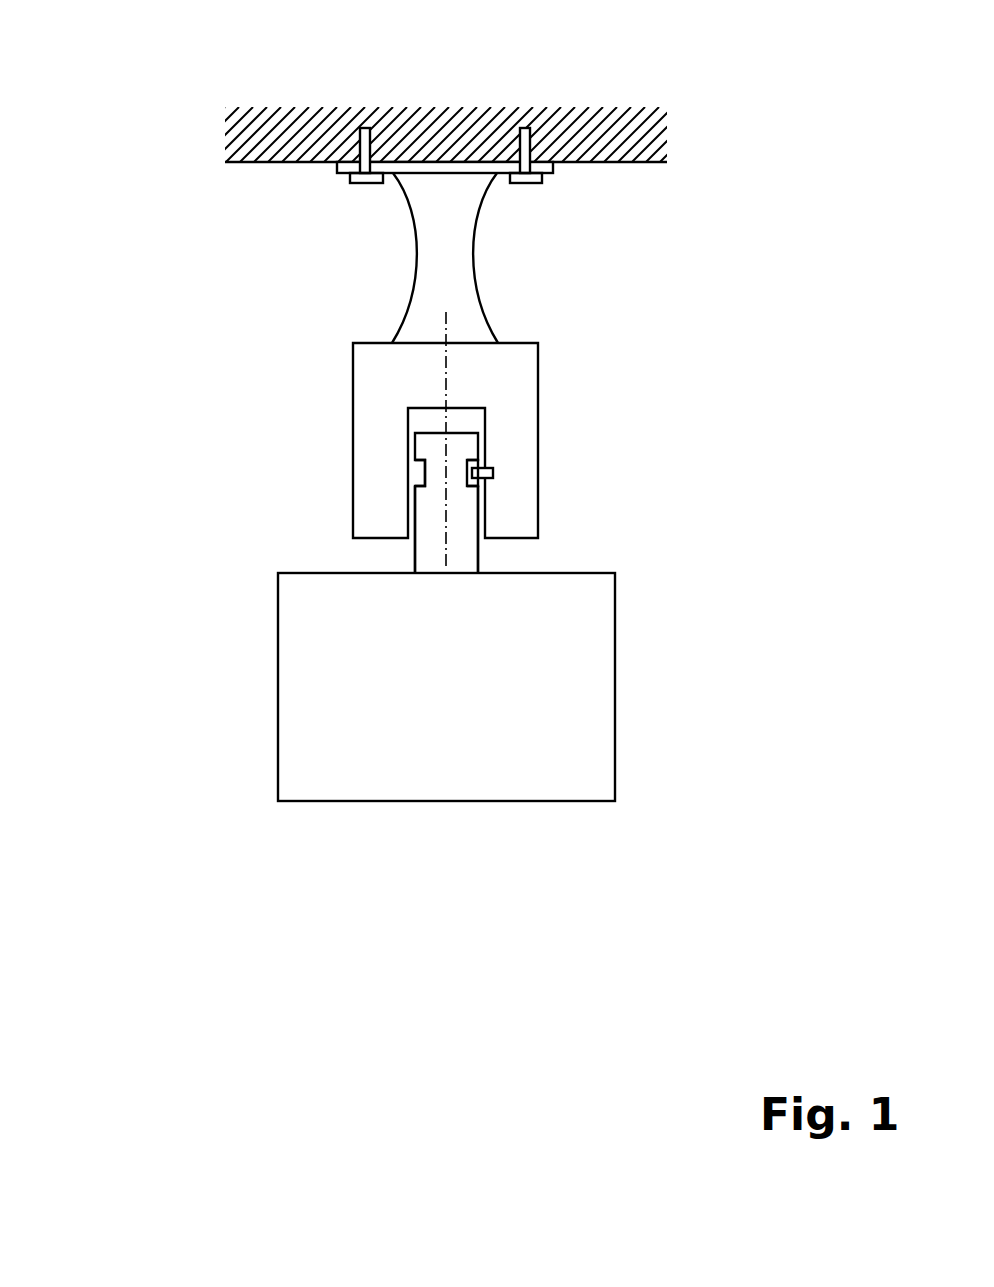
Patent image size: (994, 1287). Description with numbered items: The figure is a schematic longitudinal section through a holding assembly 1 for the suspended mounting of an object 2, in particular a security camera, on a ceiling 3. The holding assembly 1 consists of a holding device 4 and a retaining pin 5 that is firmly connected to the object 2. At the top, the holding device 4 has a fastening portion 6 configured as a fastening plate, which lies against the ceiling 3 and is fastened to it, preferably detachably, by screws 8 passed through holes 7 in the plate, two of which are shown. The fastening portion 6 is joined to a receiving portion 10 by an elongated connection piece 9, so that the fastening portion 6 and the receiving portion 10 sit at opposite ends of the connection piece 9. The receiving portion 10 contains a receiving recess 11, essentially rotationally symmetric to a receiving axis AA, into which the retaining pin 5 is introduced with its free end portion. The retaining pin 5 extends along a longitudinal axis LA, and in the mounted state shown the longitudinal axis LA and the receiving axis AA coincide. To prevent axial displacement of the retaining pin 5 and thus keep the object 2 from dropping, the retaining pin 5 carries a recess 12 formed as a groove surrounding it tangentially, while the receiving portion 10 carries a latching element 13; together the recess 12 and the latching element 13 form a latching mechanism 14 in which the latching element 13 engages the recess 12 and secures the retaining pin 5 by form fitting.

The holding assembly 1 is at (198, 260).
The object 2 is at (459, 706).
The ceiling 3 is at (610, 125).
The holding device 4 is at (458, 428).
The retaining pin 5 is at (427, 560).
The fastening portion 6 is at (490, 167).
The holes 7 is at (353, 175).
The screws 8 is at (365, 160).
The elongated connection piece 9 is at (437, 292).
The receiving portion 10 is at (522, 420).
The receiving recess 11 is at (413, 500).
The recess 12 is at (420, 473).
The latching element 13 is at (480, 472).
The latching mechanism 14 is at (498, 470).
The receiving axis AA is at (448, 325).
The longitudinal axis LA is at (448, 551).